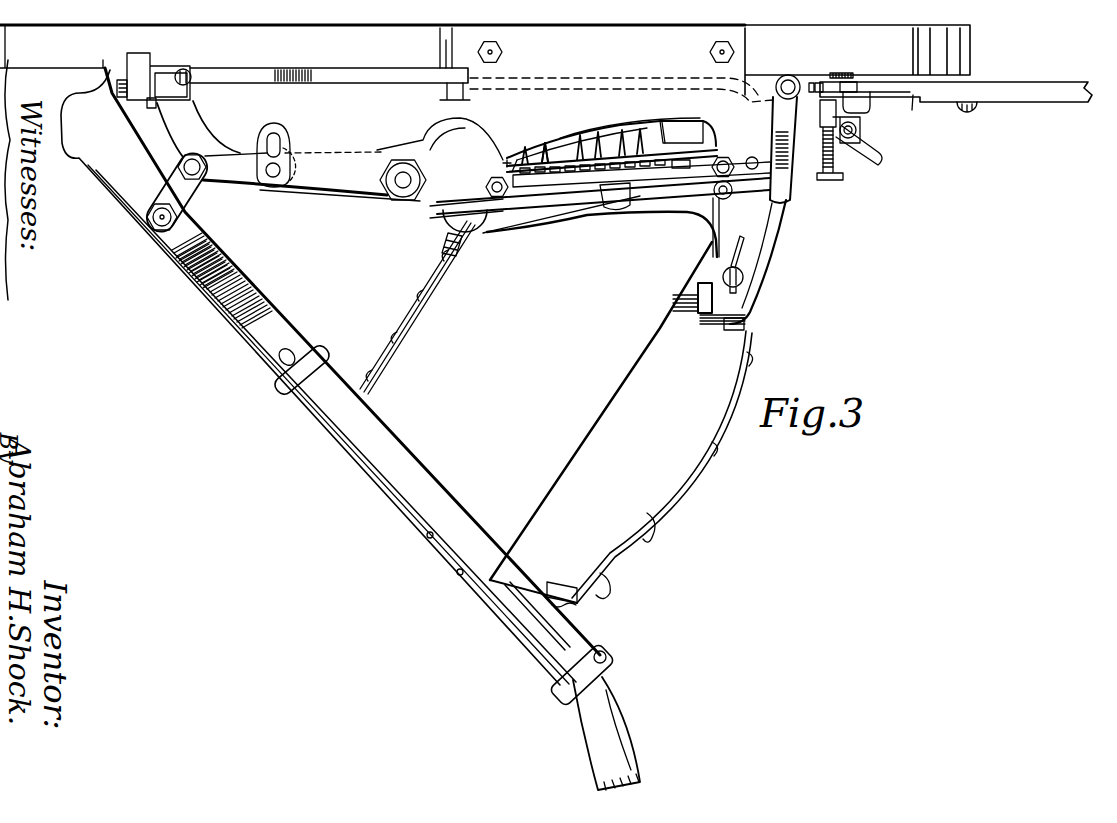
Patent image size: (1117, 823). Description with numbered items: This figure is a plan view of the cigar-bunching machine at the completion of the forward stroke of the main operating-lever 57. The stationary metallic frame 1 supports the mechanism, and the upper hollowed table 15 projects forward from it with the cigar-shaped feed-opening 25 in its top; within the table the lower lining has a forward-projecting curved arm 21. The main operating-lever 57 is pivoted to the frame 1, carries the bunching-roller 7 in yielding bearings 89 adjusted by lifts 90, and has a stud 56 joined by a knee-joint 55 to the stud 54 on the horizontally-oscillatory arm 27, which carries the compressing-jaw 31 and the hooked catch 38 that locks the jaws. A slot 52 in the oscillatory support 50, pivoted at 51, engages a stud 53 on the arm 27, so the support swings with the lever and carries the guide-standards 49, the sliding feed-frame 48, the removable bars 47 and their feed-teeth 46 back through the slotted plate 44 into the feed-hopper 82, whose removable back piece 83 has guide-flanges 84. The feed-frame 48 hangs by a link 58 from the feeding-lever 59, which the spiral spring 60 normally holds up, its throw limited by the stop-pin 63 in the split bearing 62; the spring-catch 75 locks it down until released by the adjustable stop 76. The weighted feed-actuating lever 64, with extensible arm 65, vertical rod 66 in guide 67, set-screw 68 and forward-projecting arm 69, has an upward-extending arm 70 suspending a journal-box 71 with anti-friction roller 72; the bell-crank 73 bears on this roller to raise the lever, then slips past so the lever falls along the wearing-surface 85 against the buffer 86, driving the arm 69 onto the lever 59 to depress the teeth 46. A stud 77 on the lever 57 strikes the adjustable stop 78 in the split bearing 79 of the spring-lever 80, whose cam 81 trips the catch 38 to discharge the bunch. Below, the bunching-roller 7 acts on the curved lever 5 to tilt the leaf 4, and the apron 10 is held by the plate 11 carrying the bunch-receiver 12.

The stationary metallic frame 1 is at (485, 63).
The automatically-adjustable leaf 4 is at (601, 422).
The curved lever 5 is at (746, 326).
The bunching-roller 7 is at (320, 415).
The bunch-rolling apron 10 is at (455, 307).
The metallic plate or bar 11 is at (580, 604).
The automatic bunch-receiver 12 is at (427, 537).
The upper hollowed table 15 is at (522, 144).
The forward-projecting curved arm 21 is at (696, 318).
The cigar-shaped feed-opening 25 is at (681, 132).
The horizontally-oscillatory arm 27 is at (330, 190).
The compressing-jaw 31 is at (540, 220).
The hooked catch 38 is at (447, 97).
The slightly-curved plate 44 is at (657, 147).
The feed pins or teeth 46 is at (582, 147).
The removable vertically-arranged bars 47 is at (551, 157).
The rectangular sliding feed-frame 48 is at (681, 169).
The guide-standards 49 is at (493, 179).
The horizontally-oscillatory support 50 is at (440, 145).
The pivot 51 is at (403, 163).
The slot 52 is at (283, 140).
The stud 53 is at (273, 180).
The stud 54 is at (195, 160).
The knee-joint 55 is at (190, 193).
The stud 56 is at (153, 226).
The main operating-lever 57 is at (612, 694).
The link 58 is at (607, 192).
The feeding-lever 59 is at (667, 203).
The spiral spring 60 is at (433, 207).
The adjustable split bearing 62 is at (719, 222).
The stop-pin 63 is at (731, 195).
The feed-actuating lever 64 is at (562, 96).
The longitudinally-extensible arm 65 is at (956, 97).
The vertical rod 66 is at (788, 75).
The guide 67 is at (812, 83).
The set-screw 68 is at (820, 83).
The forward-projecting arm 69 is at (786, 193).
The upward-extending arm 70 is at (132, 100).
The journal-box 71 is at (171, 86).
The anti-friction roller 72 is at (190, 68).
The bell-crank 73 is at (198, 138).
The spring-catch 75 is at (776, 215).
The adjustable stop 76 is at (745, 255).
The stud 77 is at (606, 657).
The adjustable stop 78 is at (828, 180).
The adjustable split bearing 79 is at (857, 128).
The spring-lever 80 is at (872, 155).
The cam 81 is at (150, 108).
The feed-hopper 82 is at (607, 137).
The removable back piece 83 is at (585, 138).
The guide-flanges 84 is at (505, 160).
The wearing-surface 85 is at (866, 75).
The elastic-faced stop or buffer 86 is at (870, 104).
The yielding bearings 89 is at (290, 392).
The adjustable lifts 90 is at (421, 297).